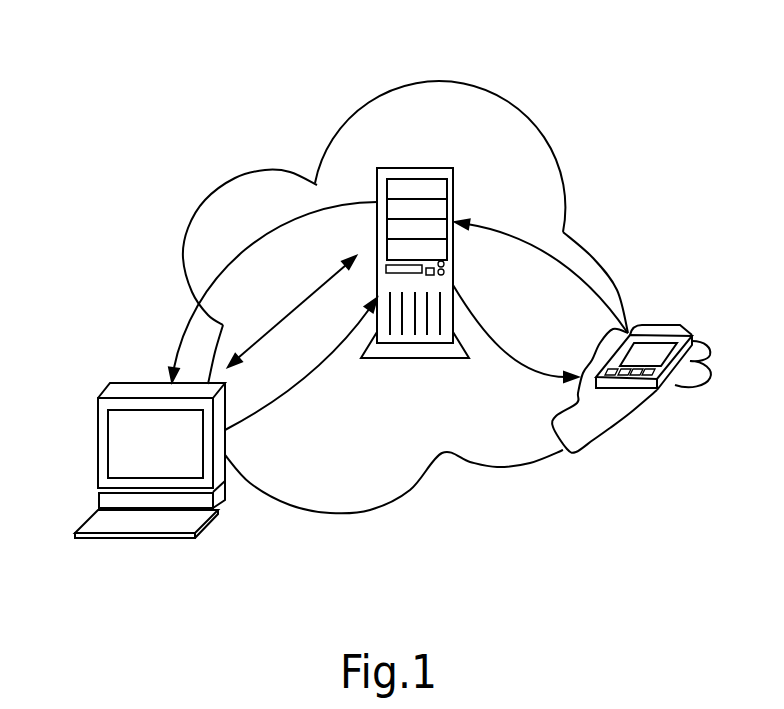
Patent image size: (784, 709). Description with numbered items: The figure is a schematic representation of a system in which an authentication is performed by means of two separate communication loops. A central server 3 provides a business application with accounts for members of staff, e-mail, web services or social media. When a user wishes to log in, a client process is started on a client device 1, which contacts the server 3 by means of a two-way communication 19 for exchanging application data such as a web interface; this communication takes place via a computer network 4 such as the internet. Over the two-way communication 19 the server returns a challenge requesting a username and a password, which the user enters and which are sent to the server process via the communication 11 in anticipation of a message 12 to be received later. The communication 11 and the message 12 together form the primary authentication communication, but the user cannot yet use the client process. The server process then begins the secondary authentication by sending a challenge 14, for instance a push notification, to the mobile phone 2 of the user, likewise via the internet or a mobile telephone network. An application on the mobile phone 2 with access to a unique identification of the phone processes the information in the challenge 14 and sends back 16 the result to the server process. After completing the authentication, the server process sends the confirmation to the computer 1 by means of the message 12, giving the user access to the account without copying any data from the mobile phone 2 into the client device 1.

The client device 1 is at (108, 445).
The mobile phone 2 is at (692, 340).
The central server 3 is at (447, 193).
The computer network 4 is at (412, 82).
The communication 11 is at (298, 383).
The message 12 is at (258, 237).
The challenge 14 is at (517, 370).
The send back 16 is at (565, 262).
The two-way communication 19 is at (293, 312).